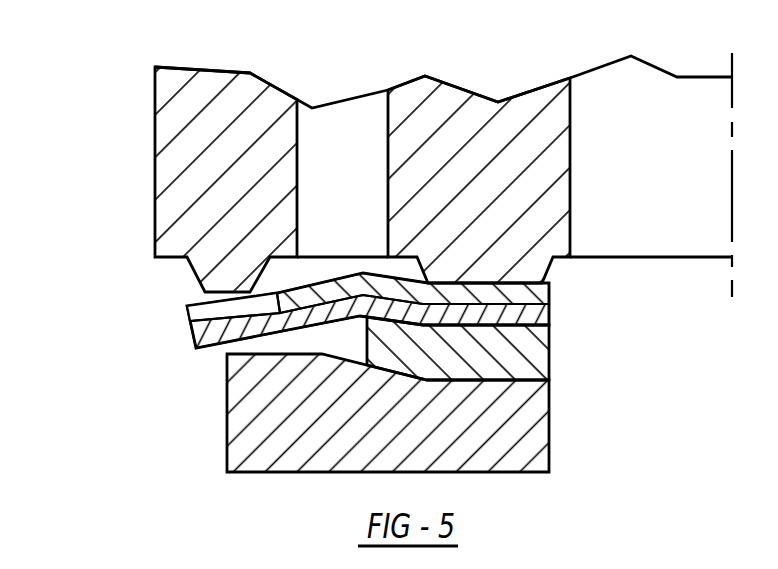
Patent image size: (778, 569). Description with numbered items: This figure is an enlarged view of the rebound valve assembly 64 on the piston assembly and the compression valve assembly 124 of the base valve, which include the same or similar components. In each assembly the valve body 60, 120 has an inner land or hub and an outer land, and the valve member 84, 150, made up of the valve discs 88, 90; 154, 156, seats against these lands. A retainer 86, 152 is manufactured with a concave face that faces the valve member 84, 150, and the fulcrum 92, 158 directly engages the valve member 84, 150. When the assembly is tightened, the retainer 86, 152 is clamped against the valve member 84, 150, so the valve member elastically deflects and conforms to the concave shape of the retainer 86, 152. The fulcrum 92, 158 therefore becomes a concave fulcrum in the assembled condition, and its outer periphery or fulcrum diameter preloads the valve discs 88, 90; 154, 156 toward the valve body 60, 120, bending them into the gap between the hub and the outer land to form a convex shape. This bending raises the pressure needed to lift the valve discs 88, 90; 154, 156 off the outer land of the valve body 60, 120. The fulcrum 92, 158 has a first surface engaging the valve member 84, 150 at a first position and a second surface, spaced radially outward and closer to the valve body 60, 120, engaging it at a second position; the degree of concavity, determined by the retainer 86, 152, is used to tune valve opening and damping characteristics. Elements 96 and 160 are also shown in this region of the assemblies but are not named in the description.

The valve body 60 is at (392, 161).
The valve body 120 is at (392, 161).
The rebound valve assembly 64 is at (243, 159).
The compression valve assembly 124 is at (226, 198).
The valve member 84 is at (296, 307).
The valve member 150 is at (296, 307).
The retainer 86 is at (331, 415).
The retainer 152 is at (237, 453).
The valve disc 88 is at (300, 298).
The valve disc 154 is at (203, 323).
The valve disc 90 is at (302, 321).
The valve disc 156 is at (203, 338).
The fulcrum 92 is at (319, 372).
The fulcrum 158 is at (407, 352).
The lip 96 is at (171, 270).
The lip 160 is at (240, 303).